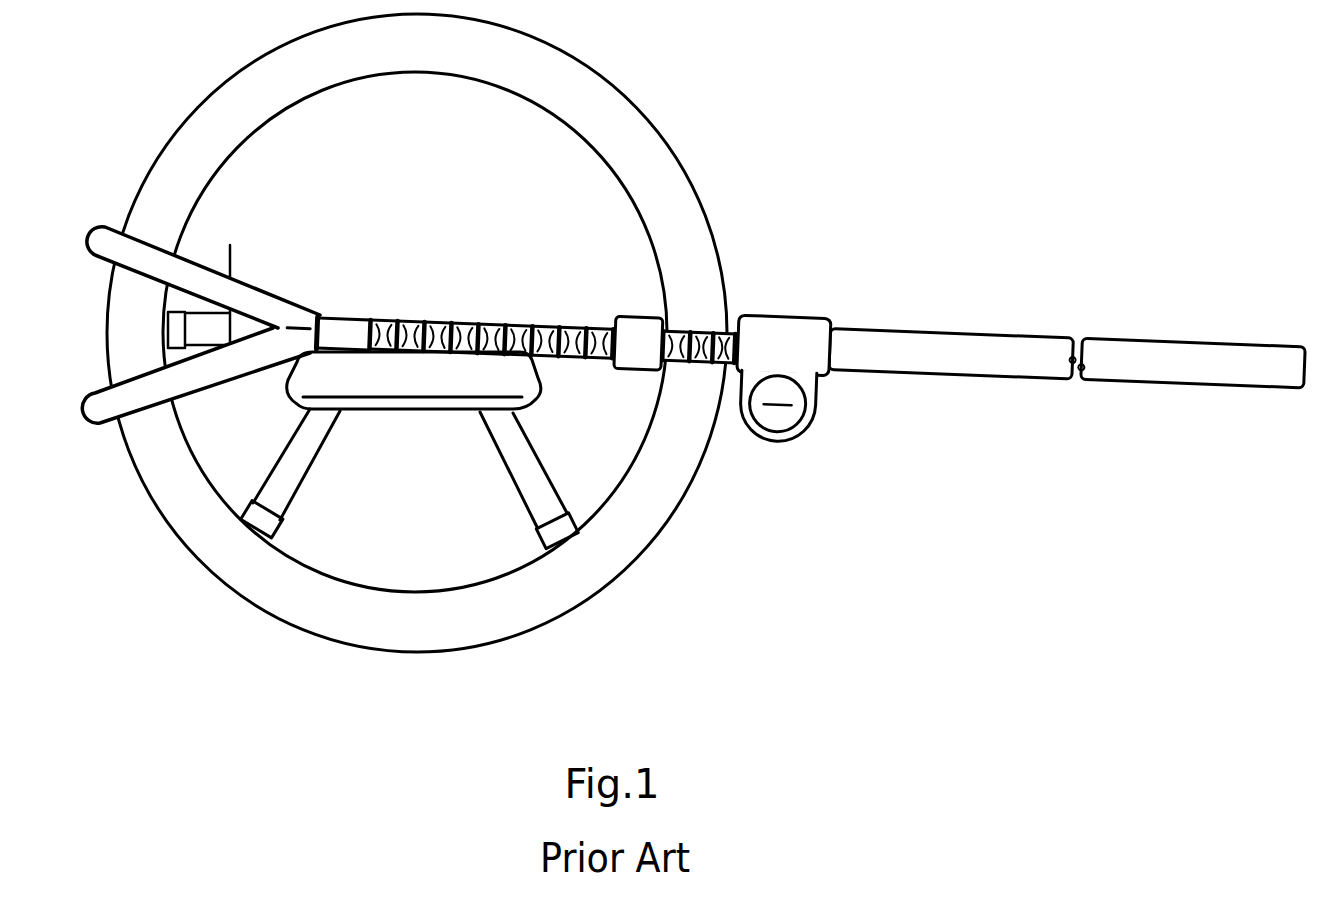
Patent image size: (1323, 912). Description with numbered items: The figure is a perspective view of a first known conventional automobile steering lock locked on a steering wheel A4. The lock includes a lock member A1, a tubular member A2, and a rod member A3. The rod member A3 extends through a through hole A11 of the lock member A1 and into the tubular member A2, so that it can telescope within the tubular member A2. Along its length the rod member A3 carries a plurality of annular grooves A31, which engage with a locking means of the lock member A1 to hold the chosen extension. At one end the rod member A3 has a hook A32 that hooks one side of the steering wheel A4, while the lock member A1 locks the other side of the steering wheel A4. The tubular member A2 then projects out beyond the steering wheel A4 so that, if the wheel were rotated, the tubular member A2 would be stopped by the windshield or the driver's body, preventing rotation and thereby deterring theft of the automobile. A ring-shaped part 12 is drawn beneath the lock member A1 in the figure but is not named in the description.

The steering wheel A4 is at (662, 153).
The hook A32 is at (205, 277).
The rod member A3 is at (528, 294).
The annular grooves A31 is at (470, 320).
The through hole A11 is at (614, 326).
The lock member A1 is at (783, 365).
The tubular member A2 is at (980, 328).
The mounting ring 12 is at (778, 428).